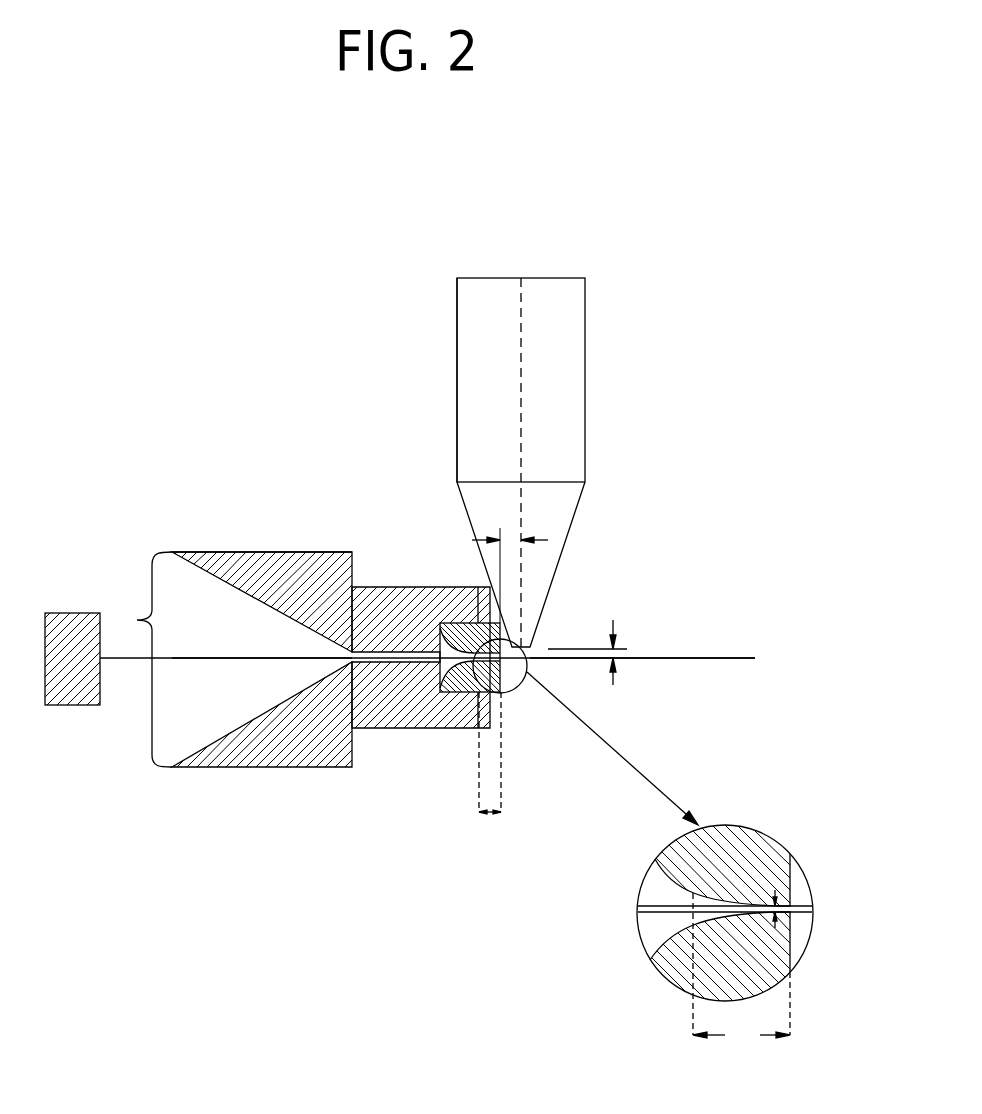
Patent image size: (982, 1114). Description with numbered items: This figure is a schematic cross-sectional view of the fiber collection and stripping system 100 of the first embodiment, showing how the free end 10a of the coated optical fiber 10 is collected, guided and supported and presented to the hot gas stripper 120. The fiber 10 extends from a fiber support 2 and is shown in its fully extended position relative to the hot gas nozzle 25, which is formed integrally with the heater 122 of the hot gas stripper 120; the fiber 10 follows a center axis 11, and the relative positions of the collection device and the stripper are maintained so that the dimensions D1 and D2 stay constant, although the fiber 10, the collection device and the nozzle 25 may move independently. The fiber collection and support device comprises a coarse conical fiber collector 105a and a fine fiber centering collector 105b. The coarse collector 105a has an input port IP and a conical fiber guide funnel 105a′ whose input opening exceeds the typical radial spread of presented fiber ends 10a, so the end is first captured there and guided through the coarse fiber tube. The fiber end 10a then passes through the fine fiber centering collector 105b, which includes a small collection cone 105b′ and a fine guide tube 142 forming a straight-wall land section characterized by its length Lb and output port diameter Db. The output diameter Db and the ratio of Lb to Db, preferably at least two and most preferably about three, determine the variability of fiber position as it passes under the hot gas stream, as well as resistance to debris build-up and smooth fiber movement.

The laser processing head 100 is at (346, 262).
The fiber support 2 is at (75, 705).
The coated optical fiber 10 is at (140, 658).
The free end of the coated optical fiber 10a is at (197, 658).
The input port IP is at (141, 659).
The conical fiber guide funnel 105a′ is at (203, 573).
The coarse conical fiber collector 105a is at (263, 552).
The fine fiber centering collector 105b is at (418, 587).
The small collection cone 105b′ is at (440, 665).
The nozzle tip 142 is at (512, 693).
The hot gas stripper 120 is at (585, 340).
The cylinder housing 122 is at (457, 318).
The hot gas nozzle 25 is at (550, 588).
The beam axis 11 is at (688, 658).
The dimension D1 is at (627, 652).
The dimension D2 is at (508, 537).
The length of the fiber tube Lb is at (634, 873).
The output port diameter Db is at (800, 915).